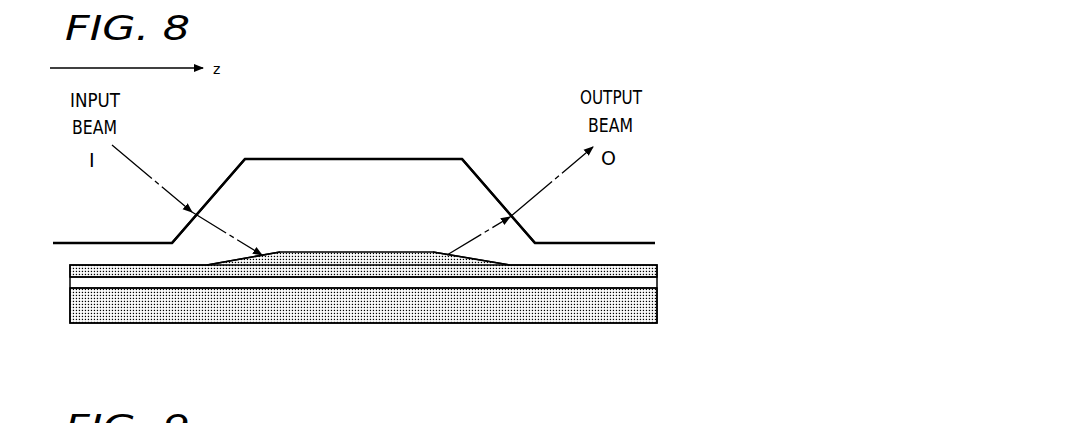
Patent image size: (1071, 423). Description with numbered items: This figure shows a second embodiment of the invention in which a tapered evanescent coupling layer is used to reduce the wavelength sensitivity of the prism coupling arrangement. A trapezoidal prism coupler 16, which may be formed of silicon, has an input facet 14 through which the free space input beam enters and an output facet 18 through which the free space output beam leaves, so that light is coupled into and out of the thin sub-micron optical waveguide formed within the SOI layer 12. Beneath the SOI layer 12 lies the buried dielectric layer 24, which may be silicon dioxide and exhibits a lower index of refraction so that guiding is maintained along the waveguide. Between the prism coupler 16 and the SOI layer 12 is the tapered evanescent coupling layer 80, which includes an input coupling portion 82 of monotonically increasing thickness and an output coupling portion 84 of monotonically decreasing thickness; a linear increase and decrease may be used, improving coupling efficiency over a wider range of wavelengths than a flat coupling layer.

The SOI layer 12 is at (657, 283).
The input facet 14 is at (224, 185).
The prism coupler 16 is at (425, 147).
The output facet 18 is at (484, 182).
The buried dielectric layer 24 is at (658, 310).
The tapered evanescent coupling layer 80 is at (658, 270).
The input coupling portion 82 is at (277, 232).
The output coupling portion 84 is at (487, 247).